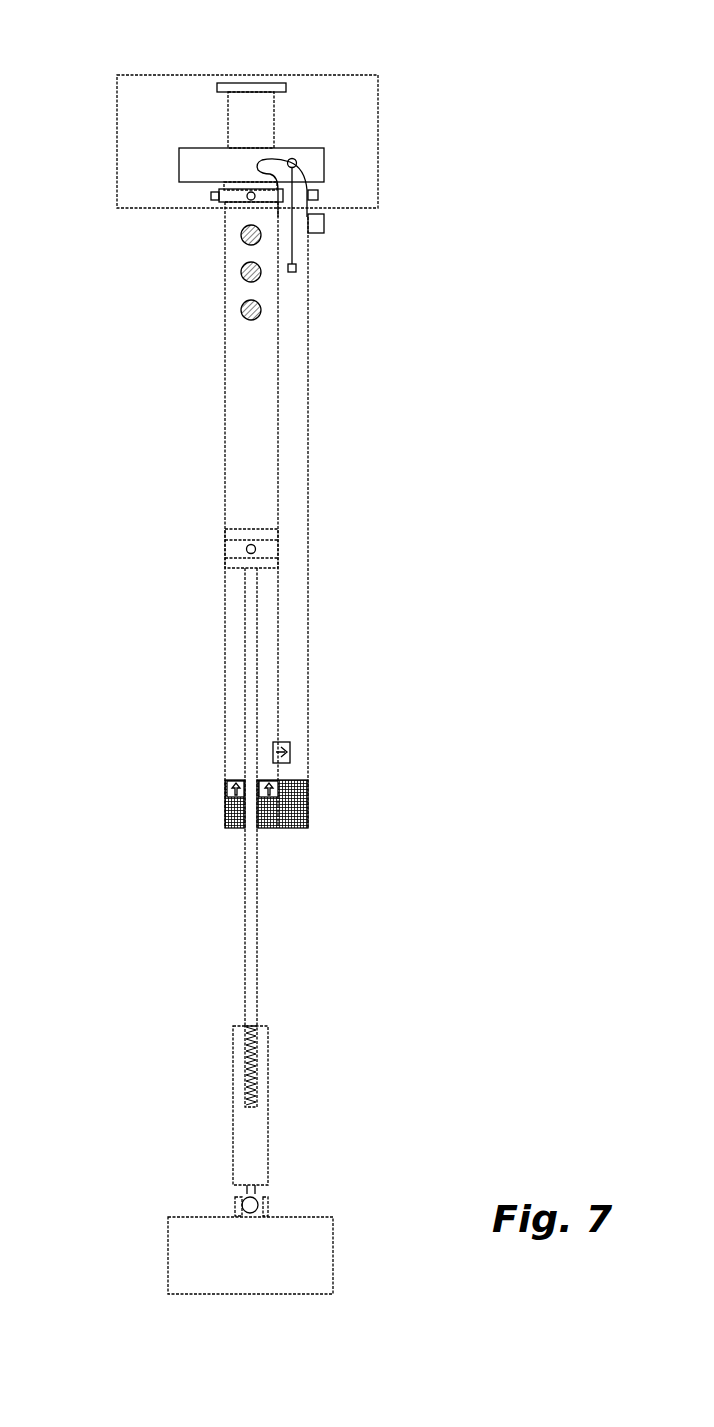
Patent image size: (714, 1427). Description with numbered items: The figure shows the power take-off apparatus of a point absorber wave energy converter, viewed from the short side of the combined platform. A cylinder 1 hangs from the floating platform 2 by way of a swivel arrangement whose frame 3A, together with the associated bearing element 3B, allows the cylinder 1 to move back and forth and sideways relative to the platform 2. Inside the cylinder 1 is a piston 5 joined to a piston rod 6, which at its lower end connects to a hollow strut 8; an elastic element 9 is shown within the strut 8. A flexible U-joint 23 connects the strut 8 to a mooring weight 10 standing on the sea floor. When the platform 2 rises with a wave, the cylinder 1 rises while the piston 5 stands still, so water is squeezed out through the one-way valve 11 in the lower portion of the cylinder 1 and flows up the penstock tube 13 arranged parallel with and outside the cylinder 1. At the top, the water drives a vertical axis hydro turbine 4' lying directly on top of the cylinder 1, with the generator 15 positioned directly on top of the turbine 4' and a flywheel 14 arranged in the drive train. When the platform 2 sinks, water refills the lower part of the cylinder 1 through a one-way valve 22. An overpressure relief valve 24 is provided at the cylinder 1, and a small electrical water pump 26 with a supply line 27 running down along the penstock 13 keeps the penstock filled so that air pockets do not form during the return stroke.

The cylinder 1 is at (235, 455).
The floating platform 2 is at (137, 121).
The frame 3A is at (240, 210).
The coupling element 3B is at (207, 197).
The vertical axis hydro turbine 4' is at (232, 104).
The piston 5 is at (232, 550).
The piston rod 6 is at (252, 673).
The hollow strut 8 is at (235, 1146).
The spring 9 is at (245, 1072).
The mooring weight 10 is at (202, 1251).
The one-way valve 11 is at (290, 750).
The penstock tube 13 is at (293, 440).
The flywheel 14 is at (233, 87).
The generator 15 is at (251, 123).
The one-way valve 22 is at (227, 793).
The flexible U-joint 23 is at (240, 1203).
The overpressure relief valve 24 is at (324, 232).
The electrical water pump 26 is at (292, 160).
The supply line 27 is at (293, 200).